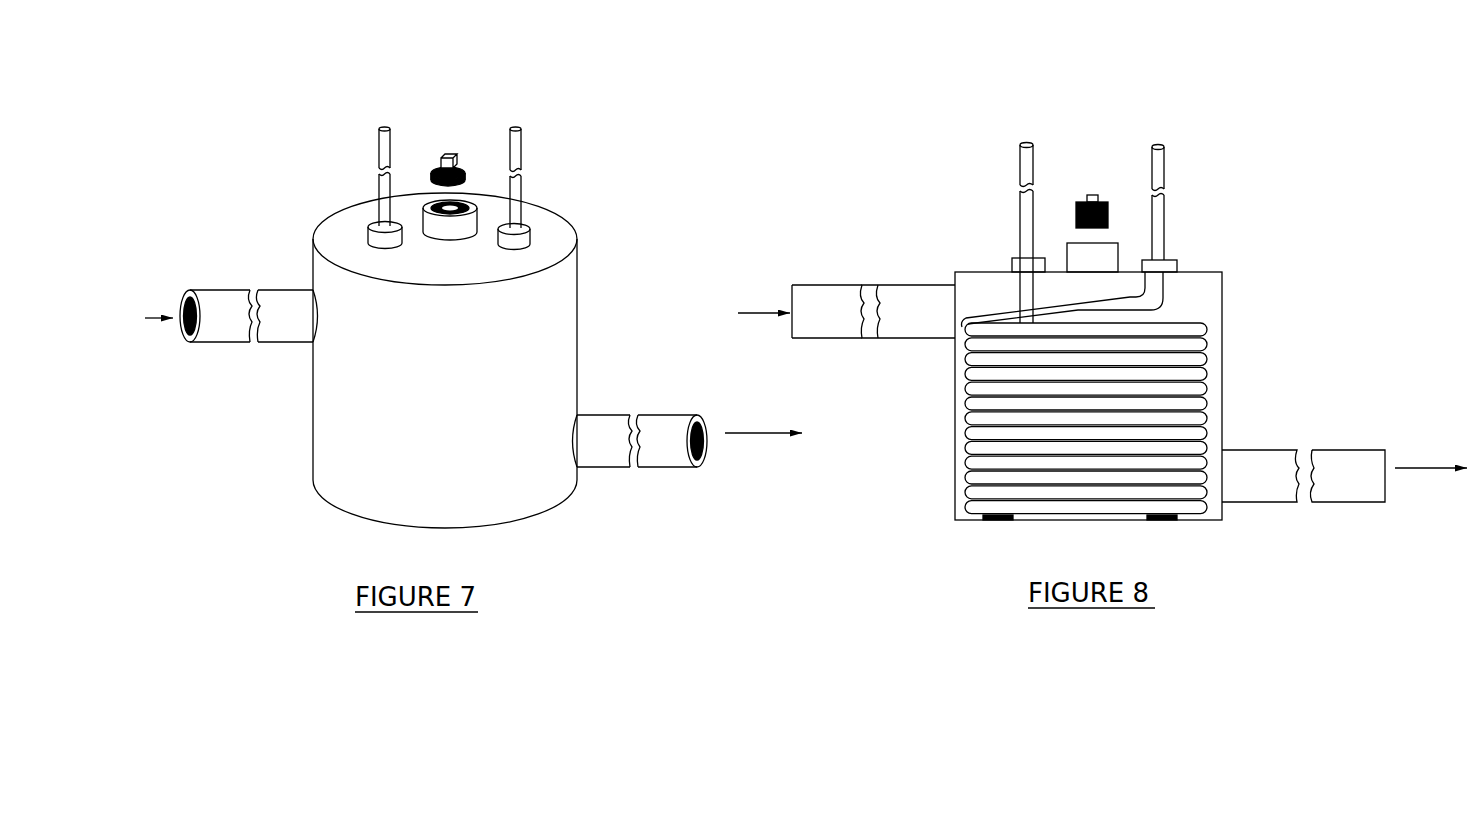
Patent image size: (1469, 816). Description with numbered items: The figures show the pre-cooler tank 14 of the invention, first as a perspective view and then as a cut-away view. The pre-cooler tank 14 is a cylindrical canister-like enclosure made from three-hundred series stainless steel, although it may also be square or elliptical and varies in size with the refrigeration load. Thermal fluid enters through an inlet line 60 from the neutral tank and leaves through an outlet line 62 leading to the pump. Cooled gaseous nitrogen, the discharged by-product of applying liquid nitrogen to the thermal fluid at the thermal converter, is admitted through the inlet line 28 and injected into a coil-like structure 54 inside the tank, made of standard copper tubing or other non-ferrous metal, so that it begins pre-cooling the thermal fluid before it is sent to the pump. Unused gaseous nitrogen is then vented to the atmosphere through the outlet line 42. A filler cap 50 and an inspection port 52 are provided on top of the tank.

In FIG. 7, the pre-cooler tank 14 is at (552, 322).
In FIG. 8, the pre-cooler tank 14 is at (1225, 369).
In FIG. 7, the inlet line 28 is at (525, 148).
In FIG. 8, the inlet line 28 is at (1167, 220).
In FIG. 7, the outlet line 42 is at (372, 138).
In FIG. 8, the outlet line 42 is at (1035, 153).
In FIG. 7, the filler cap 50 is at (467, 153).
In FIG. 8, the filler cap 50 is at (1093, 190).
In FIG. 7, the inspection port 52 is at (428, 203).
In FIG. 8, the inspection port 52 is at (1067, 243).
In FIG. 8, the coil-like structure 54 is at (1163, 322).
In FIG. 7, the inlet line 60 is at (237, 288).
In FIG. 8, the inlet line 60 is at (826, 277).
In FIG. 7, the outlet line 62 is at (668, 410).
In FIG. 8, the outlet line 62 is at (1345, 447).